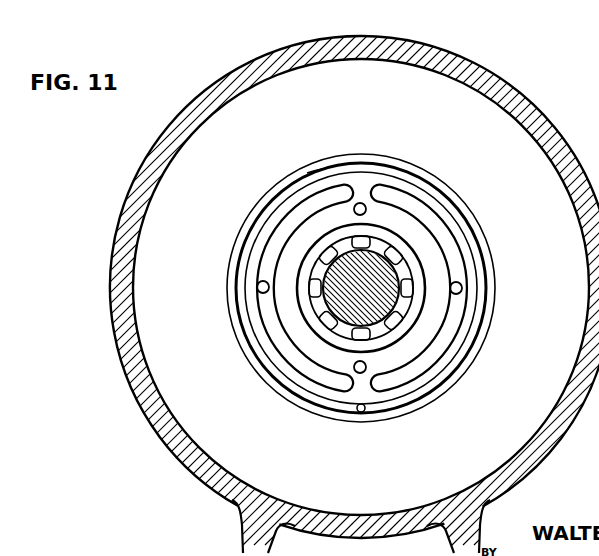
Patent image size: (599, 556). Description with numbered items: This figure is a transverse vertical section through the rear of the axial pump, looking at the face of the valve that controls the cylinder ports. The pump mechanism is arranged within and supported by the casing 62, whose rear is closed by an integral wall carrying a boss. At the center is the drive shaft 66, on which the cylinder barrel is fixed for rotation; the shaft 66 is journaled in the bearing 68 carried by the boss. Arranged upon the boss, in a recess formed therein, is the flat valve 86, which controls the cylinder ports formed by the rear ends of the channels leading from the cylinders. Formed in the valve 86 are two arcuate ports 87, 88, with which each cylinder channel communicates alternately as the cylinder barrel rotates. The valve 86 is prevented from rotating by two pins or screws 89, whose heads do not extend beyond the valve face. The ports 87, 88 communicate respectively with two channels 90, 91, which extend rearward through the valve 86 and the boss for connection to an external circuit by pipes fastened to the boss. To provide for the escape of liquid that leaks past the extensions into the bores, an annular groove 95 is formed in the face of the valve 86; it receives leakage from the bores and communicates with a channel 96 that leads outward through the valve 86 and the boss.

The casing 62 is at (152, 399).
The drive shaft 66 is at (373, 277).
The bearing 68 is at (317, 305).
The flat valve 86 is at (468, 215).
The arcuate port 87 is at (418, 213).
The arcuate port 88 is at (292, 230).
The pin or screw 89 is at (361, 204).
The channel 90 is at (462, 289).
The channel 91 is at (258, 285).
The annular groove 95 is at (314, 178).
The channel 96 is at (363, 410).